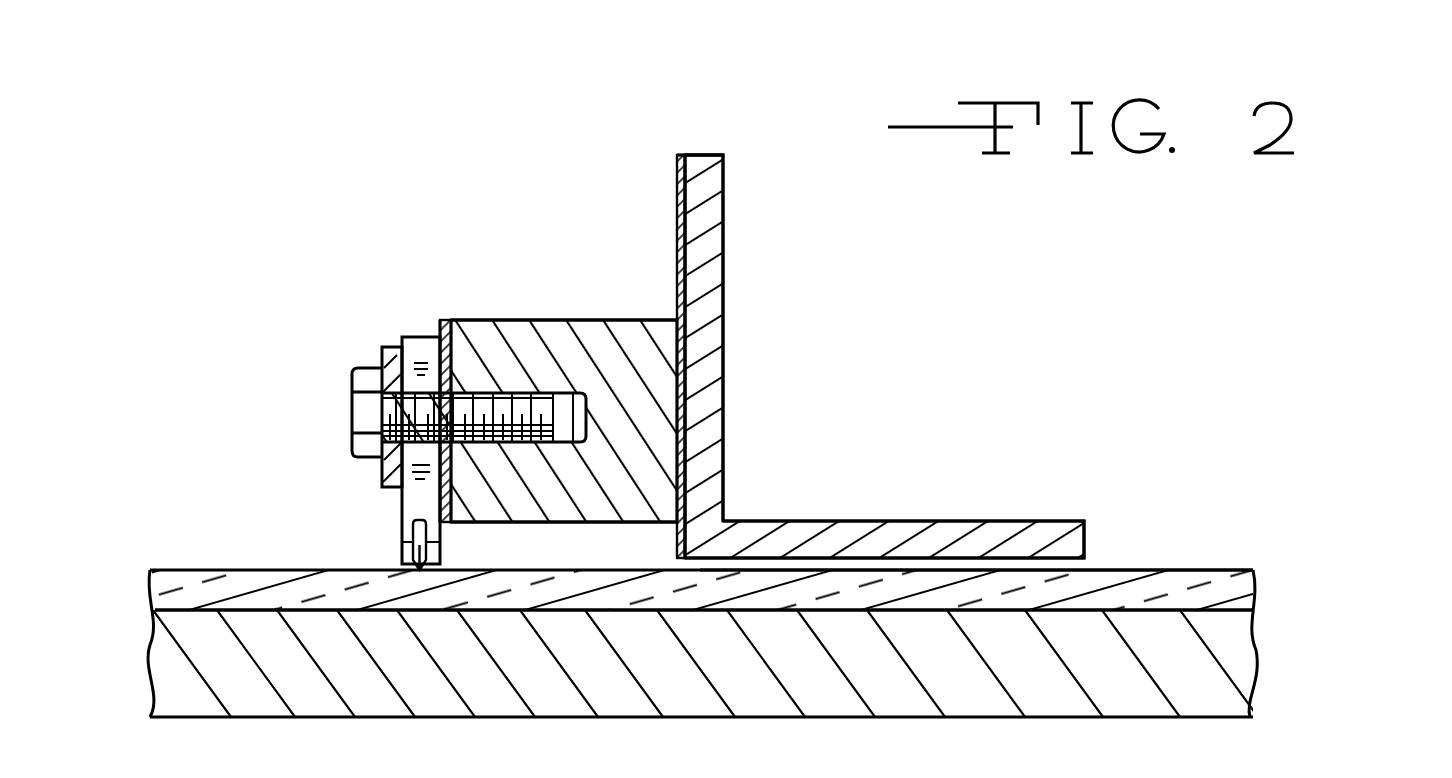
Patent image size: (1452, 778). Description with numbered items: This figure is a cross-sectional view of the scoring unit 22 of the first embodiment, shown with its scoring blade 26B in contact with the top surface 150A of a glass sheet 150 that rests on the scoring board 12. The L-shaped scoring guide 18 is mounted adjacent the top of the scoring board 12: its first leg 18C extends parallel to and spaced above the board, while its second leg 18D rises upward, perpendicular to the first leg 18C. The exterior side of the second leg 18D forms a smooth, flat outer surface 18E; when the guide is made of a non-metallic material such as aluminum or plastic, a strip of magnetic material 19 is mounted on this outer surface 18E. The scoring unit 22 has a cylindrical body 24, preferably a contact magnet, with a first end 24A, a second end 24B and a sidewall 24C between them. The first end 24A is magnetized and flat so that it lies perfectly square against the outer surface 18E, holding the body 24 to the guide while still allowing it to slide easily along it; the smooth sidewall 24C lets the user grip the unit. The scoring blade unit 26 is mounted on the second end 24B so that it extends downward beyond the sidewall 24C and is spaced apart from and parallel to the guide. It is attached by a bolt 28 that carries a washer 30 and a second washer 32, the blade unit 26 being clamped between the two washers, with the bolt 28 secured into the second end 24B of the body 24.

The scoring board 12 is at (1257, 667).
The scoring guide 18 is at (723, 392).
The first leg 18C is at (960, 521).
The second leg 18D is at (723, 198).
The outer surface 18E is at (668, 195).
The strip of magnetic material 19 is at (684, 156).
The scoring unit 22 is at (495, 306).
The body 24 is at (530, 357).
The first end 24A is at (692, 345).
The second end 24B is at (437, 327).
The sidewall 24C is at (614, 306).
The scoring blade unit 26 is at (413, 500).
The scoring blade 26B is at (412, 569).
The bolt 28 is at (350, 417).
The washer 30 is at (390, 363).
The second washer 32 is at (443, 522).
The glass sheet 150 is at (1253, 595).
The top surface 150A is at (1187, 558).